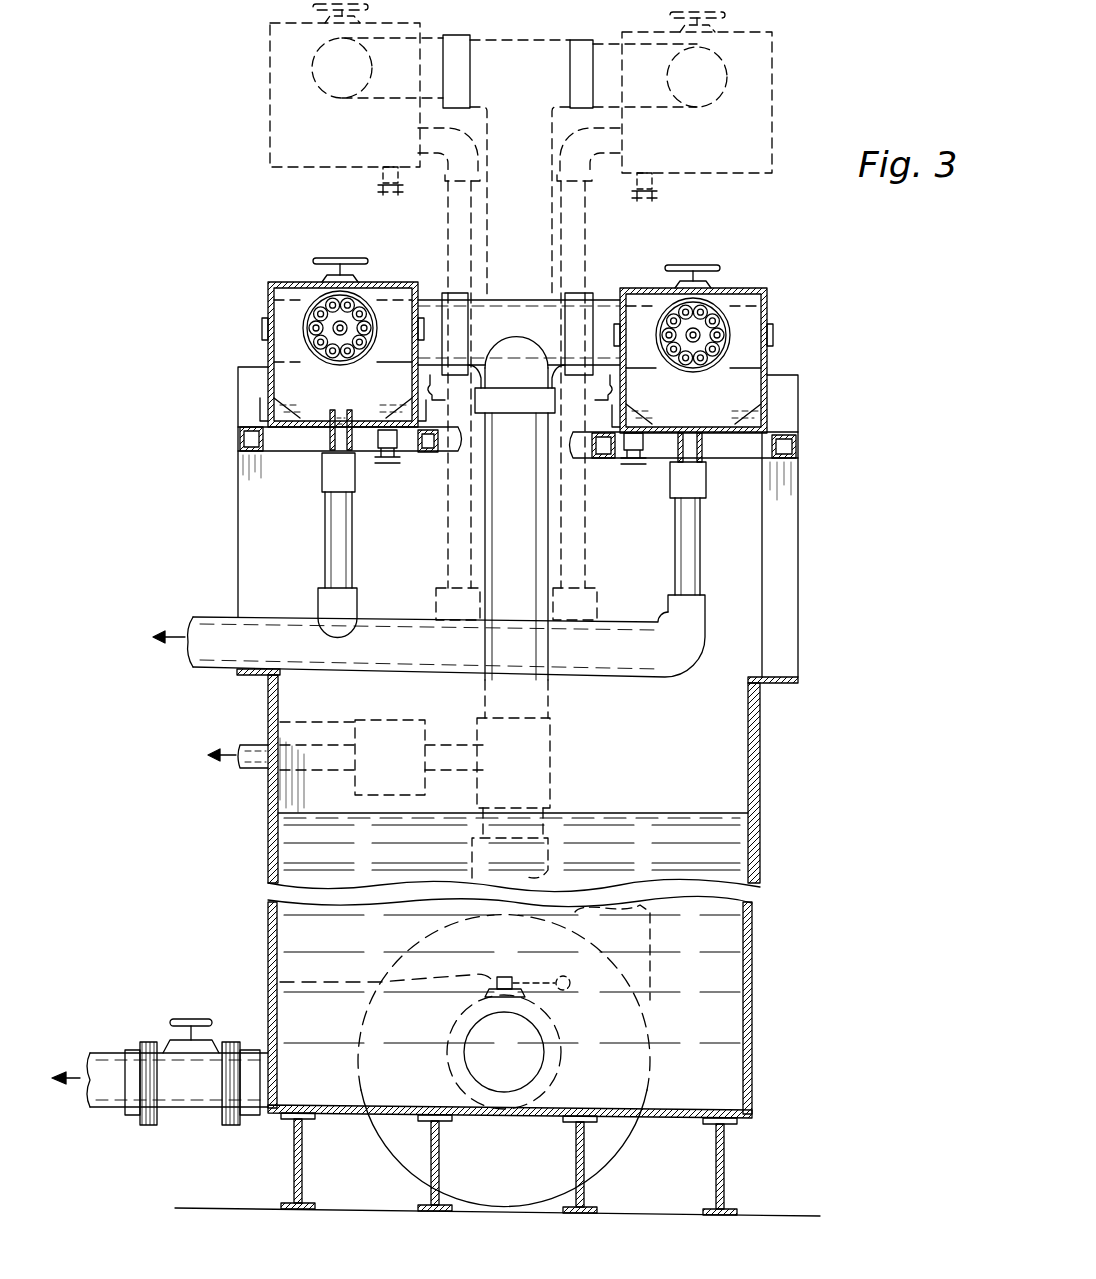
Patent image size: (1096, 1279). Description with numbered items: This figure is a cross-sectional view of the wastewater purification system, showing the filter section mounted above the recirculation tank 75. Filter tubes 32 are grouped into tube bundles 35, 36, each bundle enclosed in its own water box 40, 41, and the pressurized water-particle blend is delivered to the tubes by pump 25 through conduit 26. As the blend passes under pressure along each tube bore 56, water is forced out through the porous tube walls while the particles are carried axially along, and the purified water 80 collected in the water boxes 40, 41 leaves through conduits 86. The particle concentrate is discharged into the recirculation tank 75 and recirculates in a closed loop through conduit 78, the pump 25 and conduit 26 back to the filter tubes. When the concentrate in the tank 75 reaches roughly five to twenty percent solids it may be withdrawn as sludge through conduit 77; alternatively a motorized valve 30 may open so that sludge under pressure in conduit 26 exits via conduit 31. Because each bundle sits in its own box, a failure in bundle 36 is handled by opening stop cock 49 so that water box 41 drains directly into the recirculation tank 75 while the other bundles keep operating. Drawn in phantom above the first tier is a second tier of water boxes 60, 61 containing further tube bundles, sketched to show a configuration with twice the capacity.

The pump 25 is at (615, 1142).
The conduit 26 is at (527, 545).
The motorized valve 30 is at (280, 722).
The conduit 31 is at (257, 765).
The filter tubes 32 is at (735, 318).
The tube bundle 35 is at (736, 300).
The tube bundle 36 is at (380, 296).
The water box 40 is at (745, 290).
The water box 41 is at (290, 282).
The stop cock 49 is at (398, 462).
The tube bore 56 is at (316, 318).
The water box 60 is at (772, 93).
The water box 61 is at (270, 88).
The recirculation tank 75 is at (762, 761).
The conduit 77 is at (112, 1090).
The conduit 78 is at (290, 986).
The purified water 80 is at (306, 446).
The conduits 86 is at (345, 522).